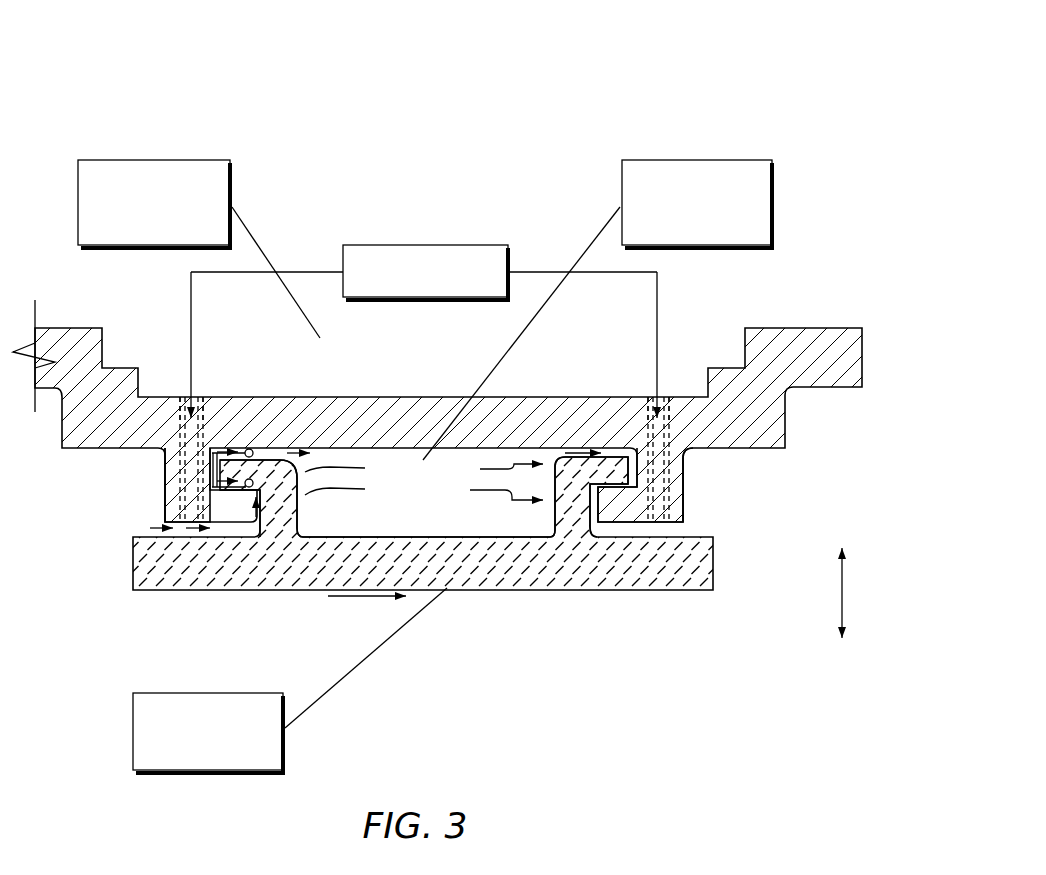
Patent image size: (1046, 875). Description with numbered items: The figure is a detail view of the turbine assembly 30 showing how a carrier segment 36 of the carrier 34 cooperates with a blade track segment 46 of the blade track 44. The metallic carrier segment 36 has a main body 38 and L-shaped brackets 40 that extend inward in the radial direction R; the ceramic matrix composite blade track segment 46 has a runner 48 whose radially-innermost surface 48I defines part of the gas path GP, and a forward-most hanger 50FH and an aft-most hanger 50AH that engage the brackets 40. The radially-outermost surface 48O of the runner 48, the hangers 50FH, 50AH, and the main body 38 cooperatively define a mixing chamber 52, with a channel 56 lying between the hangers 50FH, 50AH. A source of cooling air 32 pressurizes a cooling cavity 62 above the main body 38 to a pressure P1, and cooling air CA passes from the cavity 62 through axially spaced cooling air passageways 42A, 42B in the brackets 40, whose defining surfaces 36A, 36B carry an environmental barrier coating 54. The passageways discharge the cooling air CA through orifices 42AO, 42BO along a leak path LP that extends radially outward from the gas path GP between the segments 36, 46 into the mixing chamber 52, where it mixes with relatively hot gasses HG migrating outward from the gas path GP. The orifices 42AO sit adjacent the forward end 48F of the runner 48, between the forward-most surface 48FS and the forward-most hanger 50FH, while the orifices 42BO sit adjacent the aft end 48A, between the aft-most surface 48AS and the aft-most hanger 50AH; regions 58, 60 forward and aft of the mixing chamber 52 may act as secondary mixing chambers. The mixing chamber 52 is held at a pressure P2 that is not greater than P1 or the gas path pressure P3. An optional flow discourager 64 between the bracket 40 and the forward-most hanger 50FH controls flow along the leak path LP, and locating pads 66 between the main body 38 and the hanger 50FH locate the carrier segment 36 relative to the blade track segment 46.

The turbine assembly 30 is at (598, 97).
The source of cooling air 32 is at (428, 244).
The carrier 34 is at (133, 308).
The carrier segment 36 is at (162, 392).
The surface defining cooling air passageway 42A 36A is at (200, 428).
The surface defining cooling air passageway 42B 36B is at (670, 425).
The main body 38 is at (383, 418).
The brackets 40 is at (162, 488).
The cooling air passageway 42A is at (160, 483).
The cooling air passageway 42B is at (670, 442).
The orifices 42AO is at (182, 528).
The orifices 42BO is at (663, 528).
The blade track 44 is at (720, 580).
The blade track segment 46 is at (768, 652).
The runner 48 is at (500, 570).
The aft end 48A is at (714, 595).
The aft-most surface 48AS is at (715, 560).
The forward end 48F is at (134, 596).
The forward-most surface 48FS is at (133, 568).
The radially-innermost surface 48I is at (567, 590).
The radially-outermost surface 48O is at (387, 537).
The aft-most hanger 50AH is at (568, 496).
The forward-most hanger 50FH is at (272, 488).
The mixing chamber 52 is at (438, 468).
The environmental barrier coating 54 is at (190, 441).
The channel 56 is at (407, 470).
The region 58 is at (189, 532).
The region 60 is at (671, 532).
The cooling cavity 62 is at (360, 390).
The flow discourager 64 is at (176, 529).
The locating pads 66 is at (240, 447).
The pressure P1 is at (155, 160).
The pressure P2 is at (697, 160).
The pressure P3 is at (133, 730).
The cooling air CA is at (193, 335).
The hot gasses HG is at (133, 535).
The leak path LP is at (250, 446).
The gas path GP is at (333, 600).
The radial direction R is at (845, 590).